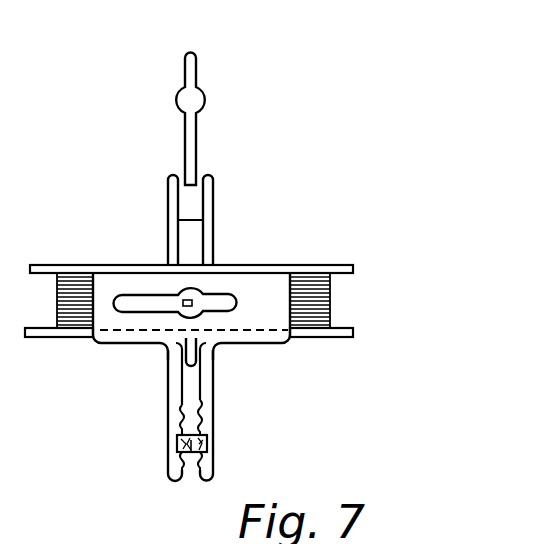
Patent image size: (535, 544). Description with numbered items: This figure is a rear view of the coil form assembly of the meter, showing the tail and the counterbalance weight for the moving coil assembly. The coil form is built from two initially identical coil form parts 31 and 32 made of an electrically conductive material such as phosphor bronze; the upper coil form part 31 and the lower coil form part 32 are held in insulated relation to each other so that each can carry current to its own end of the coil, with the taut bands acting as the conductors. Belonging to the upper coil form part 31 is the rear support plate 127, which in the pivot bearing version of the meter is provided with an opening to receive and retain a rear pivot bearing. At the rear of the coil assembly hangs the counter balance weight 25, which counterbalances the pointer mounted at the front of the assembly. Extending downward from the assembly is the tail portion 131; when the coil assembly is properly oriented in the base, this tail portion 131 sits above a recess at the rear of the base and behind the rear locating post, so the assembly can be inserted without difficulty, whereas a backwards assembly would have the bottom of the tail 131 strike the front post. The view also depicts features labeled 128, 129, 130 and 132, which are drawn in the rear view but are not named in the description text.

The coil form part 31 is at (335, 238).
The coil form part 32 is at (322, 339).
The coil winding 128 is at (306, 335).
The rear support plate 127 is at (242, 320).
The lower tubular housing 129 is at (170, 418).
The spring 130 is at (192, 403).
The tail portion 131 is at (163, 456).
The sleeve wall 132 is at (213, 464).
The counter balance weight 25 is at (192, 453).